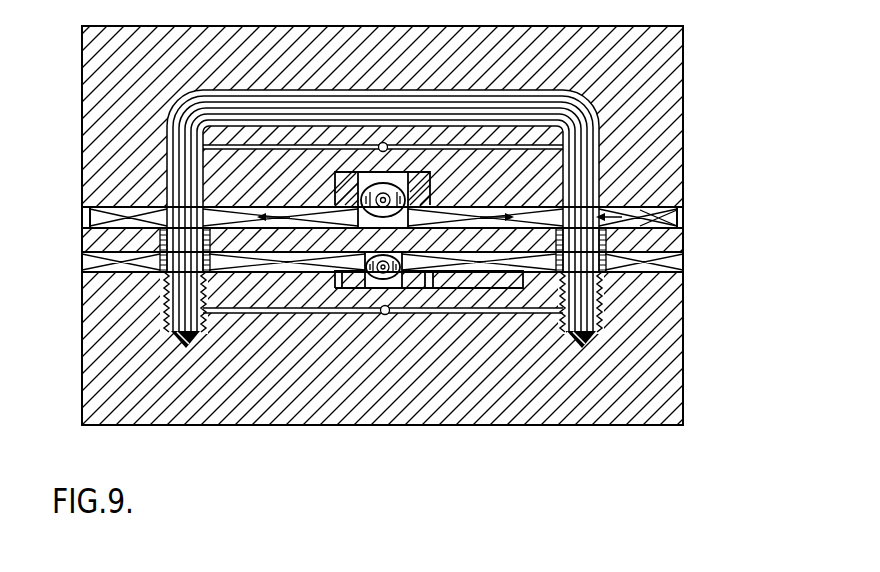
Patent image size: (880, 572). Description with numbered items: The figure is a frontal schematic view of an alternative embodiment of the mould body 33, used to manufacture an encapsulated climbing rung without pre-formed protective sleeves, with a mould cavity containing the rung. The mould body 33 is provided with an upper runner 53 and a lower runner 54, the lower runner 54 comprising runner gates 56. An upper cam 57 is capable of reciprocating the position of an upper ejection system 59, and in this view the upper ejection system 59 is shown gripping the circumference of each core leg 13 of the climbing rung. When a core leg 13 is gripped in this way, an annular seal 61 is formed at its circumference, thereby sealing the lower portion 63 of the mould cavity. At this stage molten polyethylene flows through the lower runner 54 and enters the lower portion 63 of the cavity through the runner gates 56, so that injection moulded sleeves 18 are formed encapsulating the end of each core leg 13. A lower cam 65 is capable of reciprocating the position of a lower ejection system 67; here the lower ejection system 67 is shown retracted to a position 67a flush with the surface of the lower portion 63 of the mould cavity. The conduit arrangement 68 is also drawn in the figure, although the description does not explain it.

The mould body 33 is at (618, 27).
The heating conduit bundle 68 is at (300, 92).
The core leg 13 is at (605, 162).
The upper runner 53 is at (498, 157).
The upper ejection system 59 is at (72, 215).
The annular seal 61 is at (664, 215).
The lower portion of the mould cavity 63 is at (115, 252).
The upper cam 57 is at (392, 217).
The lower cam 65 is at (390, 278).
The lower ejection system 67 is at (463, 271).
The retracted position 67a is at (75, 265).
The lower runner 54 is at (499, 314).
The injection moulded sleeve 18 is at (160, 318).
The runner gate 56 is at (204, 323).